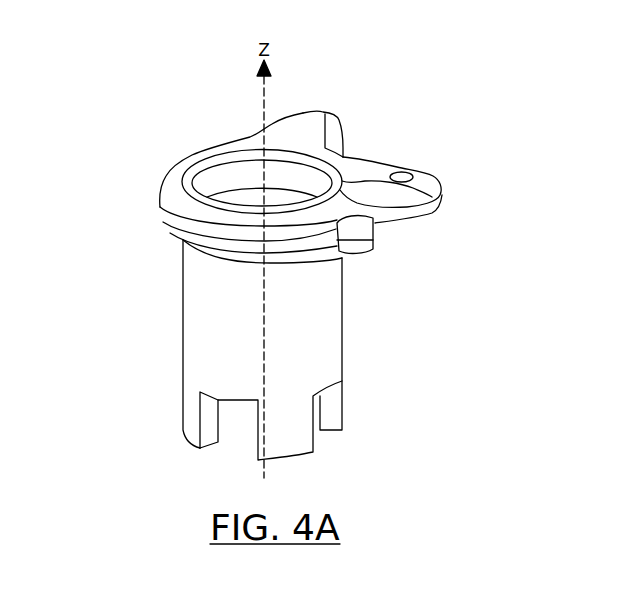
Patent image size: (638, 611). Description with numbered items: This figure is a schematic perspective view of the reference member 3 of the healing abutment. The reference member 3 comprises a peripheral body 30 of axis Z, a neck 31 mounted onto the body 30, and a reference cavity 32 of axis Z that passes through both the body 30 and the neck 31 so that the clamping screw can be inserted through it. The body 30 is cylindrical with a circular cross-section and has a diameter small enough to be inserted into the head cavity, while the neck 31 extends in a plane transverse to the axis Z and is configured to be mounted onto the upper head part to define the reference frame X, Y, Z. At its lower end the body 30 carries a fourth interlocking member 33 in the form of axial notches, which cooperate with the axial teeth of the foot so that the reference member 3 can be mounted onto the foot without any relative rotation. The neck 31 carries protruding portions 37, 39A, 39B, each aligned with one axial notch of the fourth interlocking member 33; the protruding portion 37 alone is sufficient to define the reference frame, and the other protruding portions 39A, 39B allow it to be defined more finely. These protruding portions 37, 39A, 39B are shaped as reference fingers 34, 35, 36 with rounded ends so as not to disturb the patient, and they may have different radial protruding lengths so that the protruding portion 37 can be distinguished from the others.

The reference member 3 is at (160, 143).
The peripheral body 30 is at (147, 220).
The neck 31 is at (150, 168).
The reference cavity 32 is at (236, 158).
The fourth interlocking member 33 is at (343, 395).
The reference finger 34 is at (316, 111).
The reference finger 35 is at (441, 190).
The reference finger 36 is at (377, 250).
The protruding portion 37 is at (333, 97).
The protruding portion 39A is at (383, 265).
The protruding portion 39B is at (437, 159).